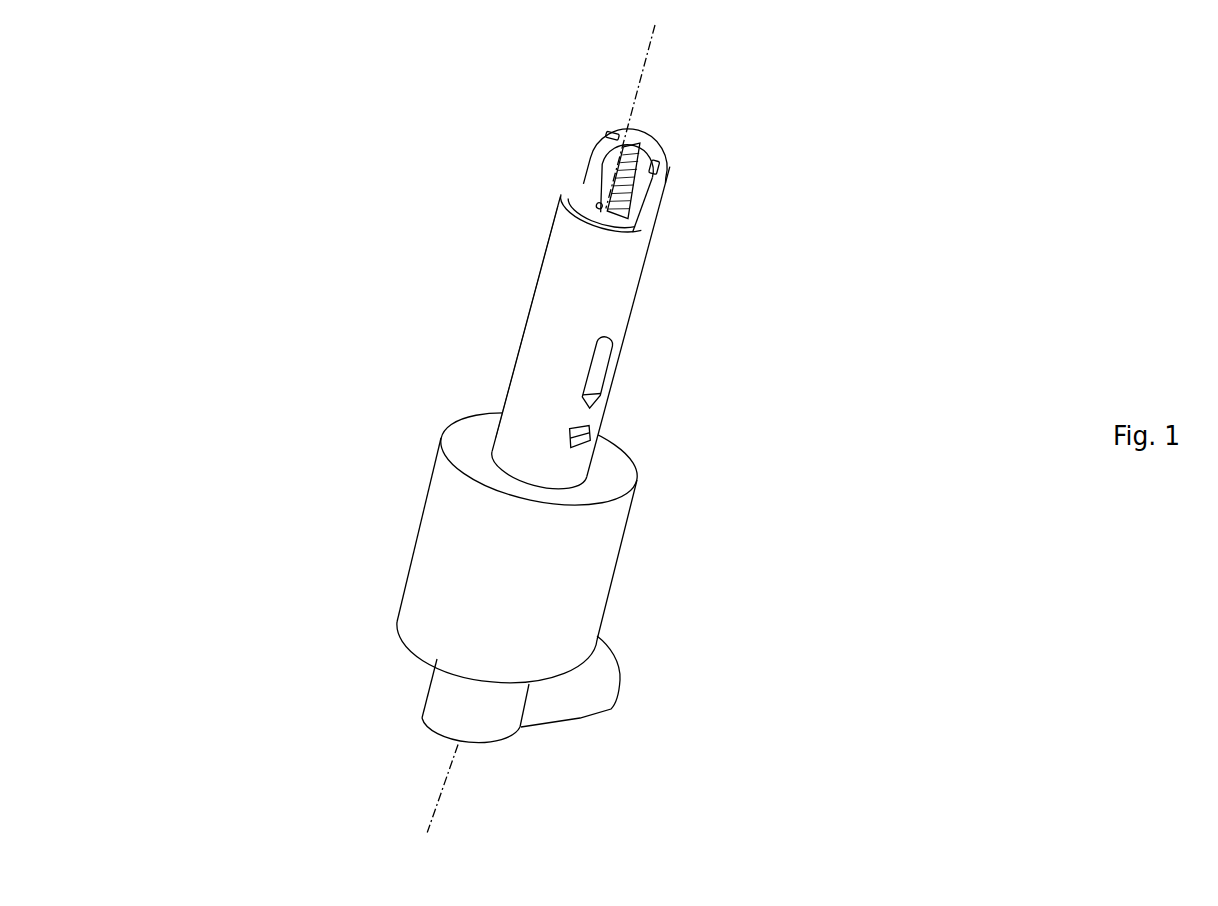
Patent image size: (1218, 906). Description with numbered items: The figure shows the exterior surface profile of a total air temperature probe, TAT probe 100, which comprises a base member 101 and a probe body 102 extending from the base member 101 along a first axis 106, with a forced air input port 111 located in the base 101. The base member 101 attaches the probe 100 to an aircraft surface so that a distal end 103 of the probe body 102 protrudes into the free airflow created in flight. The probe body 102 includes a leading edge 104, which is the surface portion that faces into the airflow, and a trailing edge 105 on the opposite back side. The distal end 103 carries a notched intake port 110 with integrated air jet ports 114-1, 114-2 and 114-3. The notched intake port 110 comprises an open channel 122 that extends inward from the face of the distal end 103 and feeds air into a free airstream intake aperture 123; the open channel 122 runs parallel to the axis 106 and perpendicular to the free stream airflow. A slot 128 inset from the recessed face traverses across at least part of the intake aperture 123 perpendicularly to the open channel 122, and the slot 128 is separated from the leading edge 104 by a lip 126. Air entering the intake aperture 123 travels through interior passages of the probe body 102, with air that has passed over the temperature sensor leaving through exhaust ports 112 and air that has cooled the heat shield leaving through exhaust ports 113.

The TAT probe 100 is at (118, 214).
The base member 101 is at (413, 553).
The probe body 102 is at (508, 387).
The distal end 103 is at (598, 117).
The leading edge 104 is at (540, 325).
The trailing edge 105 is at (628, 324).
The first axis 106 is at (654, 50).
The notched intake port 110 is at (668, 222).
The forced air input port 111 is at (582, 722).
The exhaust ports 112 is at (593, 447).
The exhaust ports 113 is at (614, 377).
The air jet port 114-1 is at (619, 138).
The air jet port 114-2 is at (642, 153).
The air jet port 114-3 is at (663, 167).
The open channel 122 is at (610, 174).
The free airstream intake aperture 123 is at (601, 210).
The lip 126 is at (563, 199).
The slot 128 is at (630, 240).